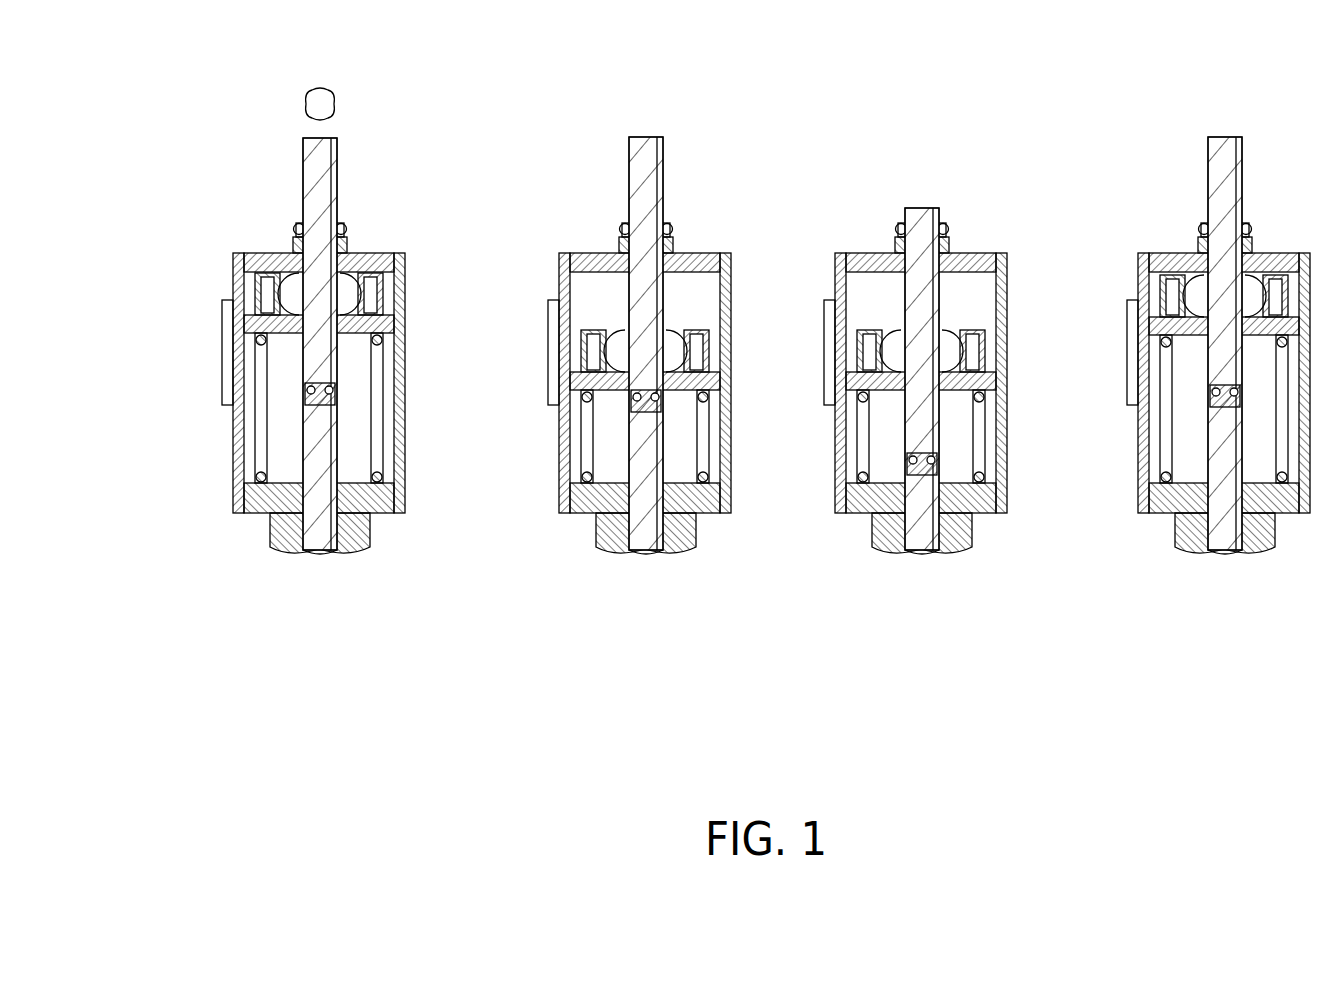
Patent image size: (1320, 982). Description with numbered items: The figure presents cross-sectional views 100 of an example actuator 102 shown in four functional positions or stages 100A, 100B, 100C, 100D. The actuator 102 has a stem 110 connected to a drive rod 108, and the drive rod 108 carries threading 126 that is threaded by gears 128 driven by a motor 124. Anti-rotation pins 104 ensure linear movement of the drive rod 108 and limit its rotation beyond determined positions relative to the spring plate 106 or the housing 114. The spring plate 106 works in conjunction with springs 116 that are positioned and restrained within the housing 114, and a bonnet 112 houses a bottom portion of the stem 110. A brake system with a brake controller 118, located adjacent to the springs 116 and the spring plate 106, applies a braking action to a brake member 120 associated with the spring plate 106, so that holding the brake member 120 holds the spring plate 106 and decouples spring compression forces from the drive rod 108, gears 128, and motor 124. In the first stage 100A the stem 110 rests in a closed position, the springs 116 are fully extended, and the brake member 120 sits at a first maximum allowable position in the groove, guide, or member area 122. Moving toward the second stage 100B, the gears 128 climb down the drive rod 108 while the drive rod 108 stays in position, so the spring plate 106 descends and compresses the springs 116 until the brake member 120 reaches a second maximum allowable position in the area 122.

The cross-sectional views 100 is at (926, 127).
The first functional position 100A is at (296, 580).
The second functional position 100B is at (612, 585).
The third functional position 100C is at (910, 592).
The fourth functional position 100D is at (1205, 590).
The actuator 102 is at (293, 182).
The anti-rotation pins 104 is at (340, 250).
The spring plate 106 is at (380, 332).
The drive rod 108 is at (315, 358).
The stem 110 is at (335, 467).
The bonnet 112 is at (268, 527).
The housing 114 is at (237, 483).
The springs 116 is at (257, 435).
The brake controller 118 is at (243, 400).
The brake member 120 is at (238, 313).
The groove, guide, or member area 122 is at (243, 363).
The motor 124 is at (262, 278).
The threading 126 is at (333, 297).
The gears 128 is at (292, 268).